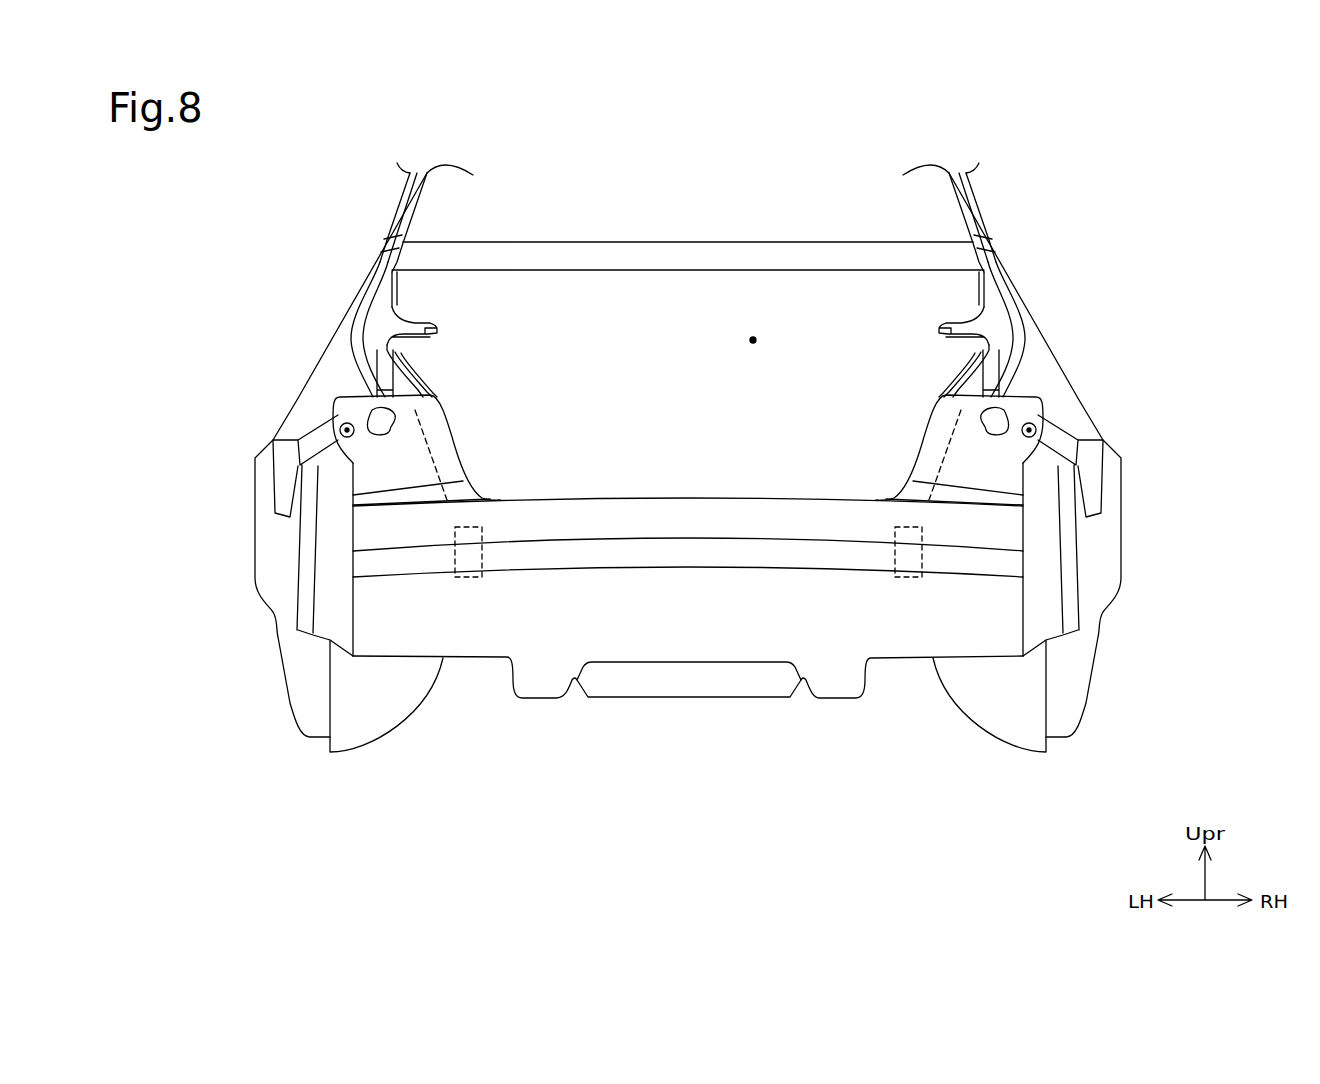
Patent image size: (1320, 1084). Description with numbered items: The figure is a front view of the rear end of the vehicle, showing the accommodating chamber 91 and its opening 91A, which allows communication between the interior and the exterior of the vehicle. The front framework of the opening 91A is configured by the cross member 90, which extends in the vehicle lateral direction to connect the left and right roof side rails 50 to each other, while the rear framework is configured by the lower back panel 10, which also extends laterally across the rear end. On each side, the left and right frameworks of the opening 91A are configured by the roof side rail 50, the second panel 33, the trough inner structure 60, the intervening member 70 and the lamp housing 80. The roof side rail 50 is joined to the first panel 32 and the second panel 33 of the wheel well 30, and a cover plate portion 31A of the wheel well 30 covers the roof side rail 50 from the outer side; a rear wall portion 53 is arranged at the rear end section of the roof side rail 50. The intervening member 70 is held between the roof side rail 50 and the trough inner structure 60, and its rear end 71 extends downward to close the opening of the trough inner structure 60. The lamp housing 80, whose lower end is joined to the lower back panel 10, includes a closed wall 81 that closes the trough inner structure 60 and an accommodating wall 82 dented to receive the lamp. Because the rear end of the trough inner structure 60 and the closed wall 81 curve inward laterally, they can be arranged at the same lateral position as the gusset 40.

The lower back panel 10 is at (677, 510).
The wheel well 30 is at (300, 411).
The cover plate portion 31A is at (388, 240).
The first panel 32 is at (419, 212).
The second panel 33 is at (397, 293).
The gusset 40 is at (483, 537).
The roof side rail 50 is at (412, 186).
The rear wall portion 53 is at (352, 339).
The trough inner structure 60 is at (426, 375).
The intervening member 70 is at (440, 333).
The rear end 71 is at (383, 375).
The lamp housing 80 is at (507, 400).
The closed wall 81 is at (428, 427).
The accommodating wall 82 is at (413, 460).
The cross member 90 is at (658, 242).
The accommodating chamber 91 is at (753, 340).
The opening 91A is at (650, 272).